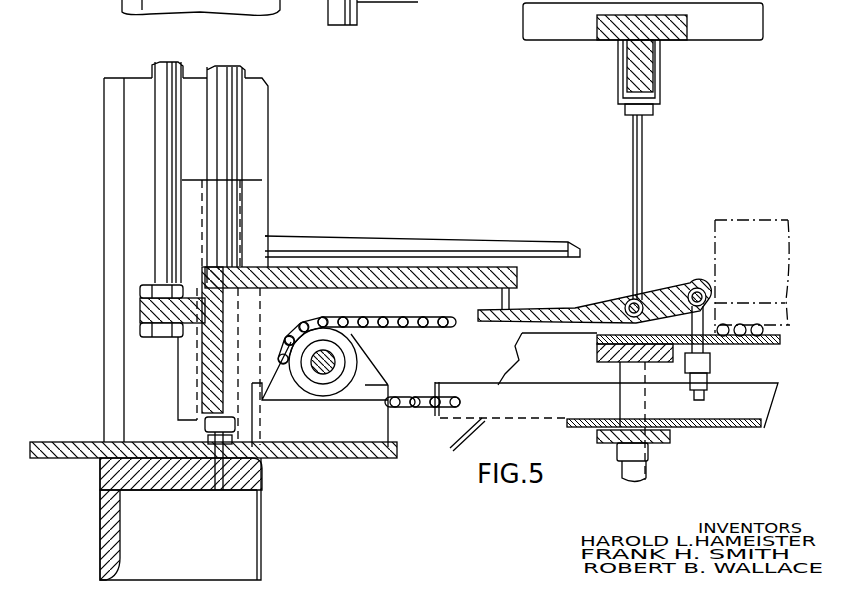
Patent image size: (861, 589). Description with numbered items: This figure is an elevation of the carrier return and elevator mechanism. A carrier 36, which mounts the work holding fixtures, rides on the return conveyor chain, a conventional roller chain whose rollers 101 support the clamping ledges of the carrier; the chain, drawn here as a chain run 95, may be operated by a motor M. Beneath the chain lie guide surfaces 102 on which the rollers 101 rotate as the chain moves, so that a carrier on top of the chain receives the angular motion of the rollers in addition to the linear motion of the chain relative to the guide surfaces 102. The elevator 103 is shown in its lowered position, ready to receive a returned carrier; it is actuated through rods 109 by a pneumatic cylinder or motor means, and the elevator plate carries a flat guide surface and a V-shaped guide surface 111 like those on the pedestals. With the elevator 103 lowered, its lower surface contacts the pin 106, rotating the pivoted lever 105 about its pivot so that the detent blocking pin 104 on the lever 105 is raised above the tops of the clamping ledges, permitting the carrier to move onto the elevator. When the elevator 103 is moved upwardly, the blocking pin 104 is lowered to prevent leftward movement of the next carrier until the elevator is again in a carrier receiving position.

The carrier means 36 is at (764, 218).
The chain 95 is at (407, 327).
The rollers 101 is at (782, 339).
The guide surfaces 102 is at (580, 428).
The elevator 103 is at (490, 242).
The detent blocking pin 104 is at (702, 287).
The pivoted lever 105 is at (599, 286).
The pin 106 is at (500, 300).
The rods 109 is at (207, 143).
The V-shaped guide surface 111 is at (612, 241).
The motor M is at (722, 344).